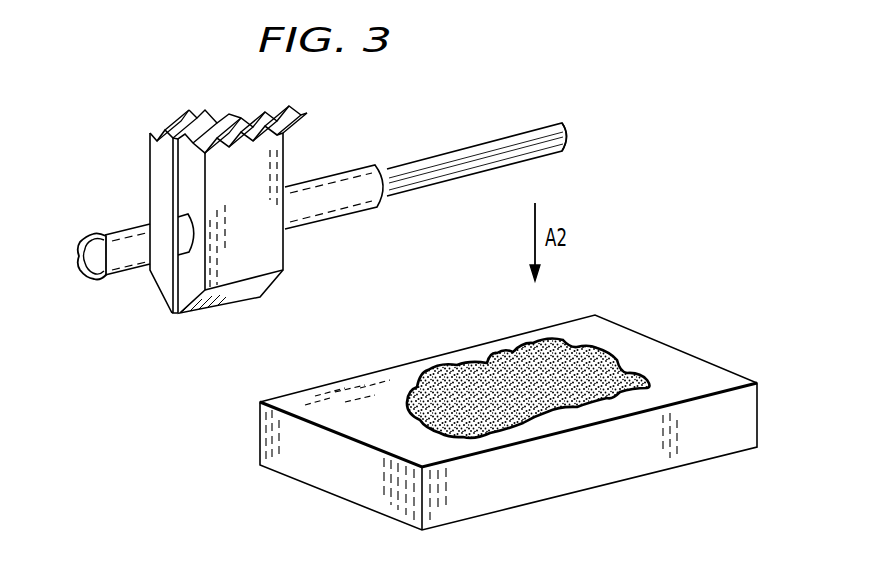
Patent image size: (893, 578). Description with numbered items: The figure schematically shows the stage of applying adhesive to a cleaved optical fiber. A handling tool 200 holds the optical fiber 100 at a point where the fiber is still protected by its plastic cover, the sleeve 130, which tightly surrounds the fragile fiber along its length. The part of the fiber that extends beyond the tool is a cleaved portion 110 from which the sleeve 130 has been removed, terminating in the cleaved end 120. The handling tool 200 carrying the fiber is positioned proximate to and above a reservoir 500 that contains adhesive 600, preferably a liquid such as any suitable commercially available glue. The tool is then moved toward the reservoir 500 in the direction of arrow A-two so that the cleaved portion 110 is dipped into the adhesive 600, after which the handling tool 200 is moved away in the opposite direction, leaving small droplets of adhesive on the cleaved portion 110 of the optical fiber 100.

The optical fiber 100 is at (472, 143).
The cleaved portion 110 is at (450, 185).
The cleaved end 120 is at (572, 135).
The plastic cover 130 is at (335, 174).
The handling tool 200 is at (137, 151).
The reservoir 500 is at (330, 473).
The adhesive 600 is at (602, 358).